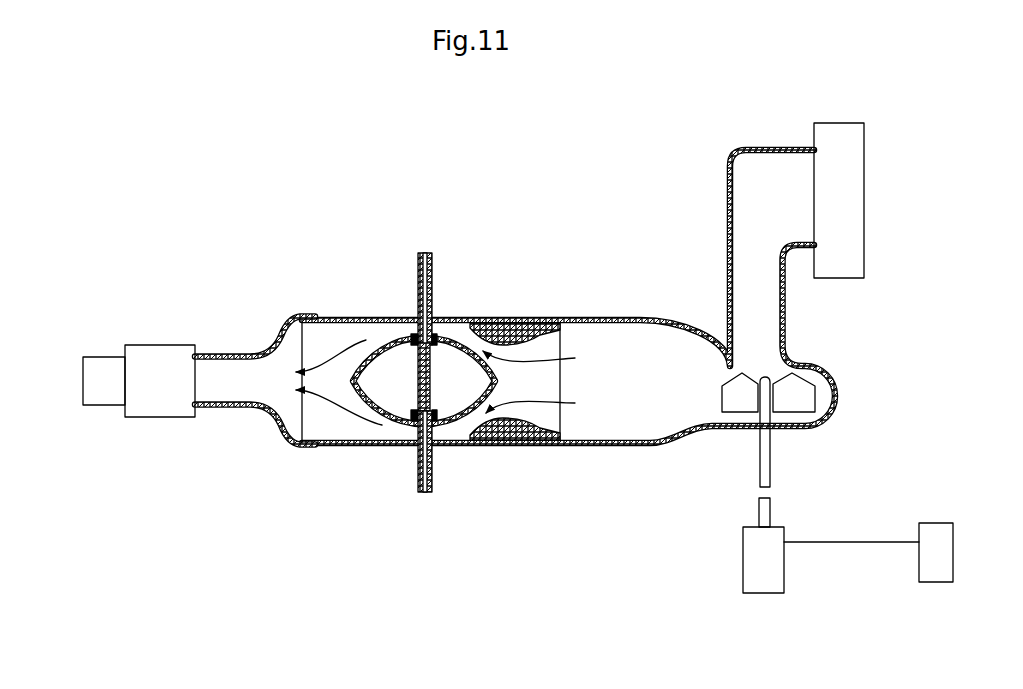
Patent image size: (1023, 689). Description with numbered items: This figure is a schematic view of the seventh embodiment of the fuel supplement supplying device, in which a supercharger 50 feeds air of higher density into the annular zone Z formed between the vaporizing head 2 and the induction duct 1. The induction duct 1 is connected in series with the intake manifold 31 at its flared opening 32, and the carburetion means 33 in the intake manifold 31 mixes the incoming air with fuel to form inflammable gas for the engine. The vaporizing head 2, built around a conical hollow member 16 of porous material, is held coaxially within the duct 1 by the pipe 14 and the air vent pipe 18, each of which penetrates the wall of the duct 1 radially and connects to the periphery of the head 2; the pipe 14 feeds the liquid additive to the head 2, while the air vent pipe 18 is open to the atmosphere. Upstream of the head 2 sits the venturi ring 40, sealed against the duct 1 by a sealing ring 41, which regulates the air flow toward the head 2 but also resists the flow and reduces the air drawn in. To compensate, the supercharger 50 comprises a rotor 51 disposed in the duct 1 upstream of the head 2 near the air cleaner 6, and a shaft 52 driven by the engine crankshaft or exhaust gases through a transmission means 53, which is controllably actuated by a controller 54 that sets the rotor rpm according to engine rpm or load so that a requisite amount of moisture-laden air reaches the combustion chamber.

The induction duct 1 is at (605, 447).
The vaporizing head 2 is at (392, 418).
The air cleaner 6 is at (865, 175).
The pipe 14 is at (433, 475).
The conical hollow member 16 is at (383, 350).
The air vent pipe 18 is at (433, 273).
The intake manifold 31 is at (217, 405).
The flared opening 32 is at (292, 327).
The carburetion means 33 is at (172, 345).
The venturi ring 40 is at (560, 340).
The sealing ring 41 is at (520, 327).
The supercharger 50 is at (720, 403).
The rotor 51 is at (798, 393).
The shaft 52 is at (772, 460).
The transmission means 53 is at (743, 580).
The controller 54 is at (952, 547).
The annular zone Z is at (460, 430).